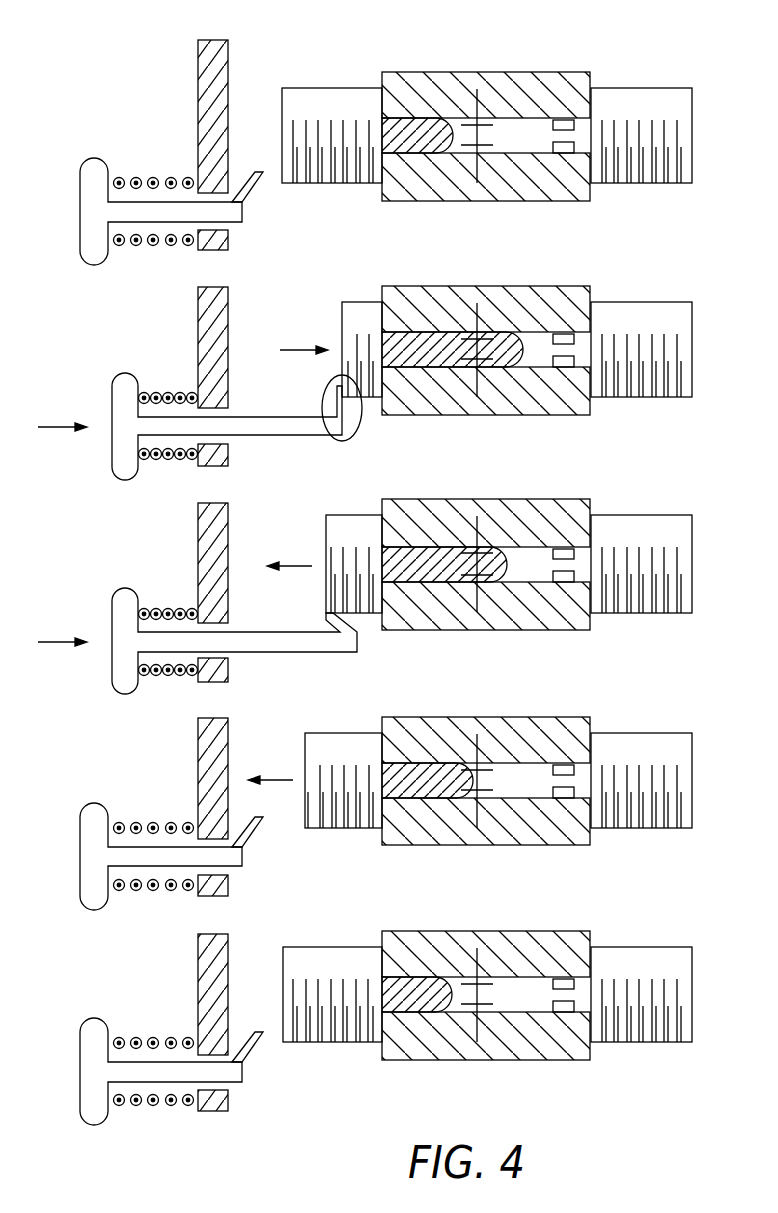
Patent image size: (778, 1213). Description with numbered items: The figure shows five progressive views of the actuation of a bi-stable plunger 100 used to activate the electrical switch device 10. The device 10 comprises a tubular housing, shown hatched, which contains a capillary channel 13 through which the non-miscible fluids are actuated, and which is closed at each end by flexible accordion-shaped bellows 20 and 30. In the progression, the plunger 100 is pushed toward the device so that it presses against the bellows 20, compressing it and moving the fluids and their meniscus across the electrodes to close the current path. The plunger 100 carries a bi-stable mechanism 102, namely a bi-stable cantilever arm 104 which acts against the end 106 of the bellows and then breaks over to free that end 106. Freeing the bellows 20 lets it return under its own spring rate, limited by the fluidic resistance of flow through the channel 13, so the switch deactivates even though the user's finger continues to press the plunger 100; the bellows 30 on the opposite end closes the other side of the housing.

The bi-stable plunger 100 is at (117, 90).
The bi-stable mechanism 102 is at (360, 395).
The bi-stable cantilever arm 104 is at (249, 193).
The end of the bellows 106 is at (282, 107).
The bellows 20 is at (328, 177).
The capillary channel 13 is at (513, 127).
The bellows 30 is at (655, 98).
The device 10 is at (668, 167).